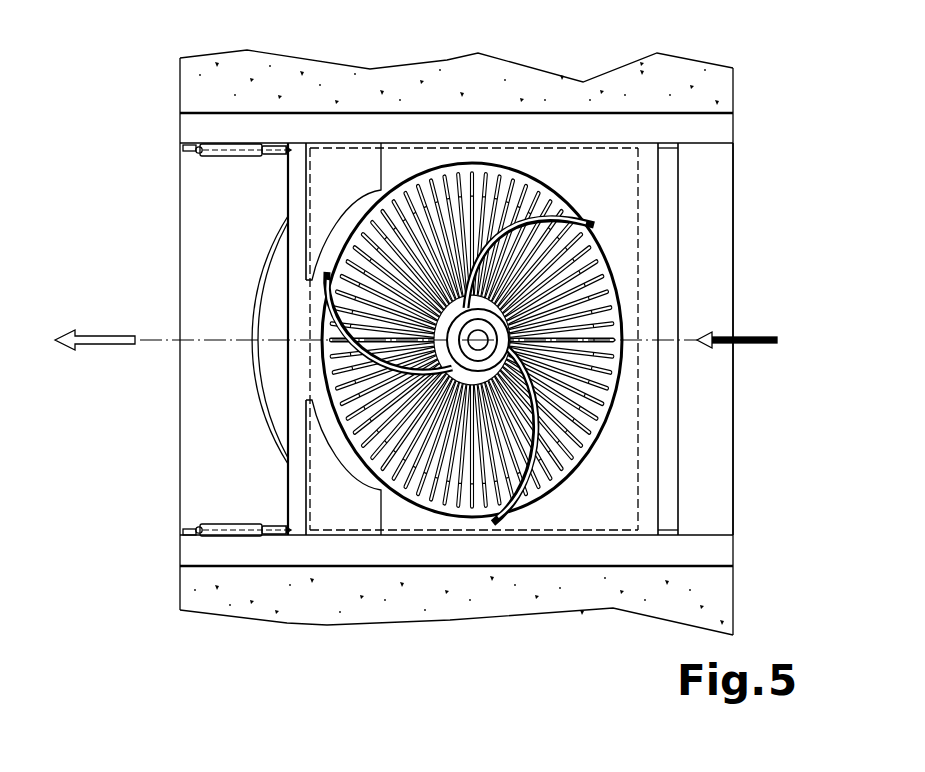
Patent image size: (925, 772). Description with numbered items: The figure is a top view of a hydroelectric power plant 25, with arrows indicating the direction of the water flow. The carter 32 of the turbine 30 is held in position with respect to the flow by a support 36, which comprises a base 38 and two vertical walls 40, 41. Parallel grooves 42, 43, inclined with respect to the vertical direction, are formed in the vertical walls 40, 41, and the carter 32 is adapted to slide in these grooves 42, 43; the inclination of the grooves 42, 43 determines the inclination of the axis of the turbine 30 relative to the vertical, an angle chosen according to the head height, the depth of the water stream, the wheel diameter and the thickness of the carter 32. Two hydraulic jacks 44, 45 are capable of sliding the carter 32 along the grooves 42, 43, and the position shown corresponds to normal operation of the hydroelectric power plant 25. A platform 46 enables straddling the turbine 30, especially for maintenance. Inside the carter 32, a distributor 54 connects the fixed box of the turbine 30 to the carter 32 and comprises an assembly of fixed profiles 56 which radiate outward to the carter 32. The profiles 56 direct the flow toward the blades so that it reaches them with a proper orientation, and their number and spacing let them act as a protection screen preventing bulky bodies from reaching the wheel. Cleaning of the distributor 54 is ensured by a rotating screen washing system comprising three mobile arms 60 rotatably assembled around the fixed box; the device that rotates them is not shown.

The hydroelectric power plant 25 is at (569, 63).
The turbine 30 is at (253, 390).
The carter 32 is at (413, 513).
The support 36 is at (736, 397).
The base 38 is at (710, 462).
The vertical wall 40 is at (207, 550).
The vertical wall 41 is at (225, 127).
The groove 42 is at (188, 528).
The groove 43 is at (192, 152).
The hydraulic jack 44 is at (237, 524).
The hydraulic jack 45 is at (237, 156).
The platform 46 is at (347, 510).
The distributor 54 is at (590, 470).
The fixed profiles 56 is at (497, 166).
The mobile arms 60 is at (530, 500).